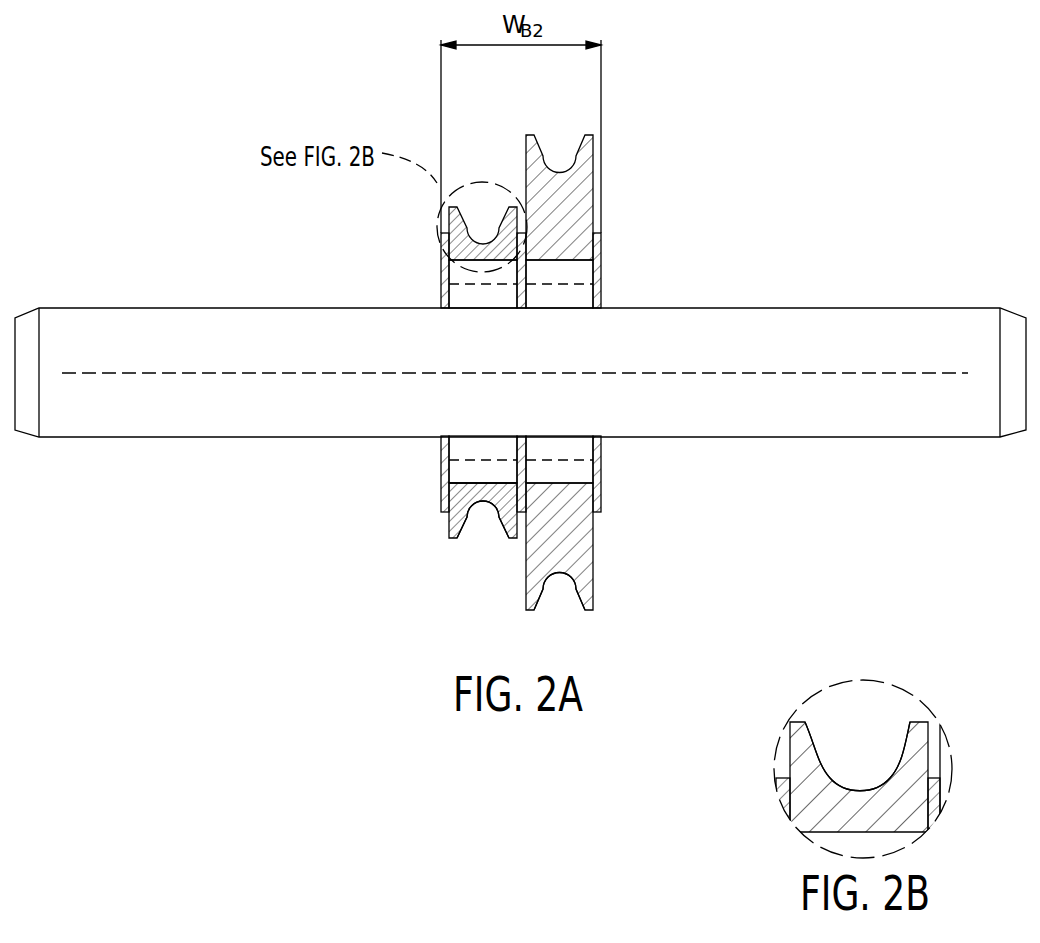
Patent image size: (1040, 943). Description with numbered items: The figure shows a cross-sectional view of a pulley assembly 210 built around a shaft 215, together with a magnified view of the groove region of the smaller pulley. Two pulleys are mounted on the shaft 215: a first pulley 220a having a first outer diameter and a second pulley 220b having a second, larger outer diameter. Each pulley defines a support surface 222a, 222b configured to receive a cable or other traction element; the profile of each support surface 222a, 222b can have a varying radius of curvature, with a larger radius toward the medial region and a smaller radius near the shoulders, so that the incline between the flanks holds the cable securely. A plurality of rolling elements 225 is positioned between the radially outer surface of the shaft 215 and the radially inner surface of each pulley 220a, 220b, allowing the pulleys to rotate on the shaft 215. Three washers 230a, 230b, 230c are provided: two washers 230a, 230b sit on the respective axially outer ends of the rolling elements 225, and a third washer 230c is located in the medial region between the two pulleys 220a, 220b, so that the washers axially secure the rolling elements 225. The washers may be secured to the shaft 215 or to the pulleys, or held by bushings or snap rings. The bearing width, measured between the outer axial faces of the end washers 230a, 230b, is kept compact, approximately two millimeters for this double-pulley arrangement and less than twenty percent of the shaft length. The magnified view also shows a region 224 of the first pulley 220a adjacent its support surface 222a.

In FIG. 2A, the pulley assembly 210 is at (797, 287).
In FIG. 2A, the shaft 215 is at (136, 360).
In FIG. 2A, the first pulley 220a is at (449, 247).
In FIG. 2B, the first pulley 220a is at (823, 793).
In FIG. 2A, the second pulley 220b is at (548, 528).
In FIG. 2A, the support surface 222a is at (450, 539).
In FIG. 2B, the support surface 222a is at (887, 787).
In FIG. 2A, the support surface 222b is at (557, 573).
In FIG. 2A, the pulley hub 224 is at (453, 501).
In FIG. 2A, the rolling elements 225 is at (578, 285).
In FIG. 2A, the washer 230a is at (442, 297).
In FIG. 2A, the washer 230b is at (598, 450).
In FIG. 2A, the washer 230c is at (507, 528).